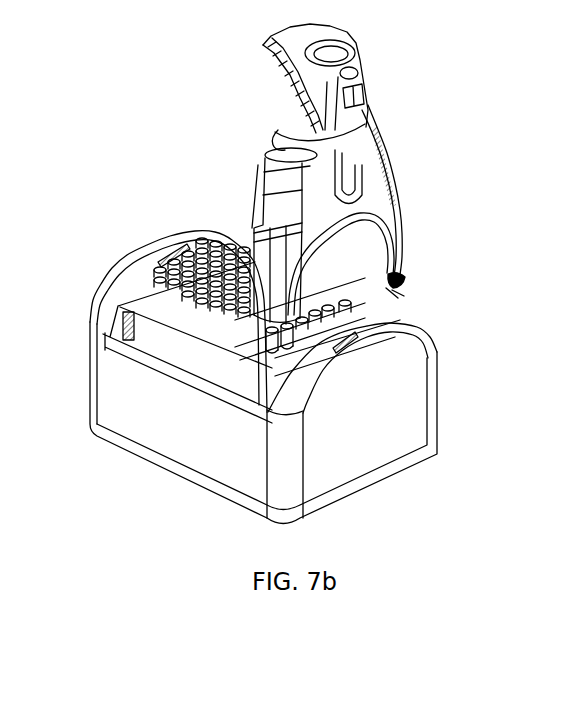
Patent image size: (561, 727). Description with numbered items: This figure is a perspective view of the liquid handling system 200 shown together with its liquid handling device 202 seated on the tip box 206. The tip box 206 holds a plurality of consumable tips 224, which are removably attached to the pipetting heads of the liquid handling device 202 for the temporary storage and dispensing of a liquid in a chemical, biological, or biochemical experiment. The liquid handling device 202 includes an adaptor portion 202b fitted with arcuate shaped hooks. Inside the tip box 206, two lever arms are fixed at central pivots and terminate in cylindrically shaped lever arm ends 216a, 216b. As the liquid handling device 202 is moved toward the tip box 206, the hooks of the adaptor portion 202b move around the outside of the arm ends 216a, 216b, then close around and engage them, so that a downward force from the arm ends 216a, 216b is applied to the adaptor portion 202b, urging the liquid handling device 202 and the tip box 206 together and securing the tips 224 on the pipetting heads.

The system 200 is at (128, 131).
The liquid handling device 202 is at (392, 138).
The adaptor portion 202b is at (405, 274).
The tip box 206 is at (415, 438).
The lever arm end 216a is at (258, 337).
The lever arm end 216b is at (392, 302).
The consumable tips 224 is at (226, 283).